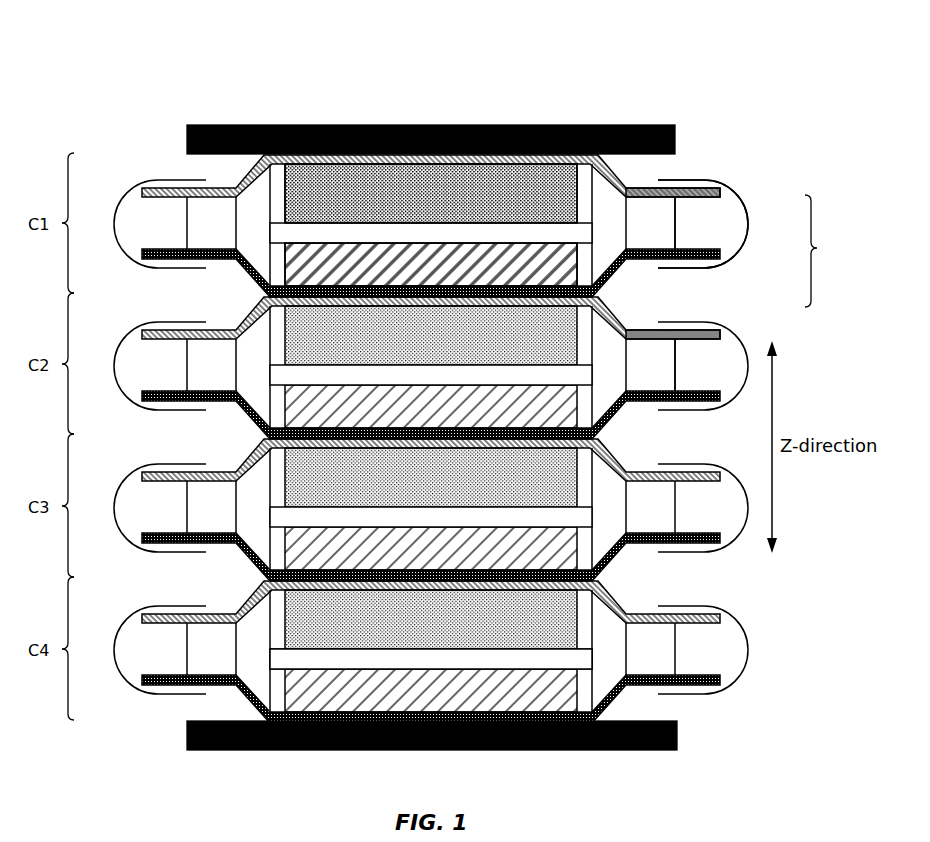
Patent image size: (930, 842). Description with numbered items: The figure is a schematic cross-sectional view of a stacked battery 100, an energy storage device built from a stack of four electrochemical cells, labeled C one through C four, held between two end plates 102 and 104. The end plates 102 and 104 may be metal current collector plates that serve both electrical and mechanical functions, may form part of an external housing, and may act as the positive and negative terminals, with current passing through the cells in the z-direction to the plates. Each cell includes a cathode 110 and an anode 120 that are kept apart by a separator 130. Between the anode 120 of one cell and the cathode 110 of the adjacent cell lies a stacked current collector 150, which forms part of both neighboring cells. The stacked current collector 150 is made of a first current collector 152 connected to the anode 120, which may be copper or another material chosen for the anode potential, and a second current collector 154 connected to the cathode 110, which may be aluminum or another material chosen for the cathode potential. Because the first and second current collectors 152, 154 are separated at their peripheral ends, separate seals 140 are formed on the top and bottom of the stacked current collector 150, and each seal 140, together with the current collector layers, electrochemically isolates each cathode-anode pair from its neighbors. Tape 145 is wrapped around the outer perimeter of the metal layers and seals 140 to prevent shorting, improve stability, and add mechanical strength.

The stacked battery 100 is at (282, 65).
The end plate 102 is at (552, 125).
The end plate 104 is at (303, 750).
The cathode 110 is at (283, 182).
The anode 120 is at (284, 250).
The separator 130 is at (268, 658).
The seal 140 is at (676, 231).
The tape 145 is at (712, 181).
The stacked current collector 150 is at (827, 251).
The first current collector 152 is at (749, 223).
The second current collector 154 is at (722, 335).